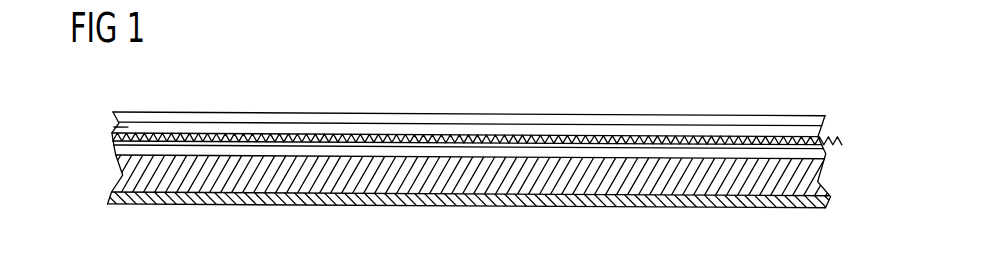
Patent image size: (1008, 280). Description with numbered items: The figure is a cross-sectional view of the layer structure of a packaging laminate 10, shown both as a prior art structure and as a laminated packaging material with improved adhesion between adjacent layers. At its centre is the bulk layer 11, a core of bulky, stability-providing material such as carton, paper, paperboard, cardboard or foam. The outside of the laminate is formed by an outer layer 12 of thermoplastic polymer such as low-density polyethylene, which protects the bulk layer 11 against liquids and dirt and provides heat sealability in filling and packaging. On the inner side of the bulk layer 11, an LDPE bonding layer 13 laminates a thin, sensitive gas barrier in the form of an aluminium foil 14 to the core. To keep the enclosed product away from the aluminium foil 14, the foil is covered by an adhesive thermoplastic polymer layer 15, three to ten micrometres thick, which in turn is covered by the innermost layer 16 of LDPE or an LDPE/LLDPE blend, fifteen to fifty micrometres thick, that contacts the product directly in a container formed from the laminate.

The packaging laminate 10 is at (782, 70).
The bulk layer 11 is at (118, 180).
The outer layer 12 is at (824, 197).
The LDPE bonding layer 13 is at (819, 153).
The aluminium foil 14 is at (820, 139).
The adhesive thermoplastic polymer layer 15 is at (115, 125).
The innermost layer 16 is at (693, 124).